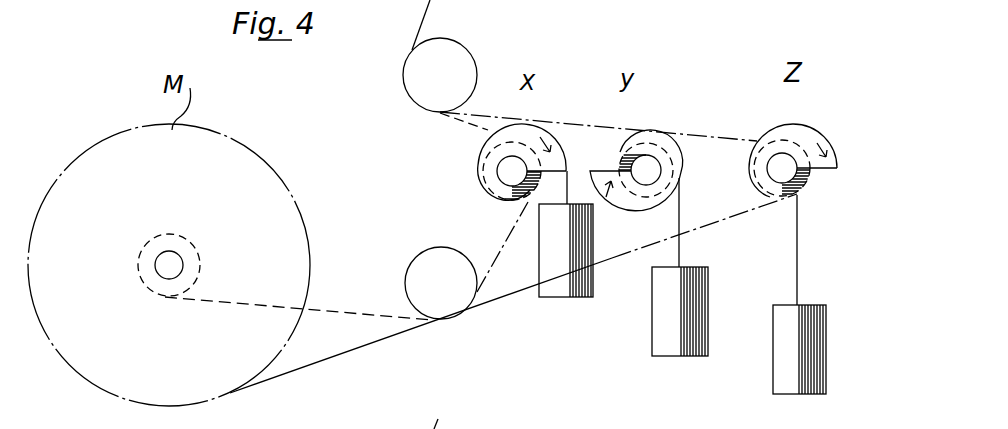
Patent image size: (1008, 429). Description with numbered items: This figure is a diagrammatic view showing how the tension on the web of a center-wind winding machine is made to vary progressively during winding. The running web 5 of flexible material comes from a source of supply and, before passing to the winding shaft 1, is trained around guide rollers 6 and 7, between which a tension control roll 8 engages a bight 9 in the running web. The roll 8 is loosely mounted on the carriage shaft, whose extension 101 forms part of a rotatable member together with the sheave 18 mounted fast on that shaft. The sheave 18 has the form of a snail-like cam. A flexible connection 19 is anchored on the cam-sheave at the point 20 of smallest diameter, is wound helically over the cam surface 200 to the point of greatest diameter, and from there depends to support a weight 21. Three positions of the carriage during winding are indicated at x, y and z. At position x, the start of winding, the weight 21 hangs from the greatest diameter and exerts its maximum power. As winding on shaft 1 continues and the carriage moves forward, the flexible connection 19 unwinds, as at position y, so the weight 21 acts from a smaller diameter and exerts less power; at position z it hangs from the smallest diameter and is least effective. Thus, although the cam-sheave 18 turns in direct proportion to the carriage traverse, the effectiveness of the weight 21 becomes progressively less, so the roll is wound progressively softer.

The winding shaft 1 is at (170, 263).
The running web 5 is at (420, 15).
The guide roller 6 is at (440, 75).
The guide roller 7 is at (441, 283).
The tension control roll 8 is at (518, 198).
The bight 9 is at (481, 117).
The sheave 18 is at (497, 137).
The flexible connection 19 is at (567, 177).
The anchored end 20 is at (523, 175).
The weight 21 is at (552, 297).
The extension of shaft 101 is at (500, 168).
The cam surface 200 is at (527, 125).